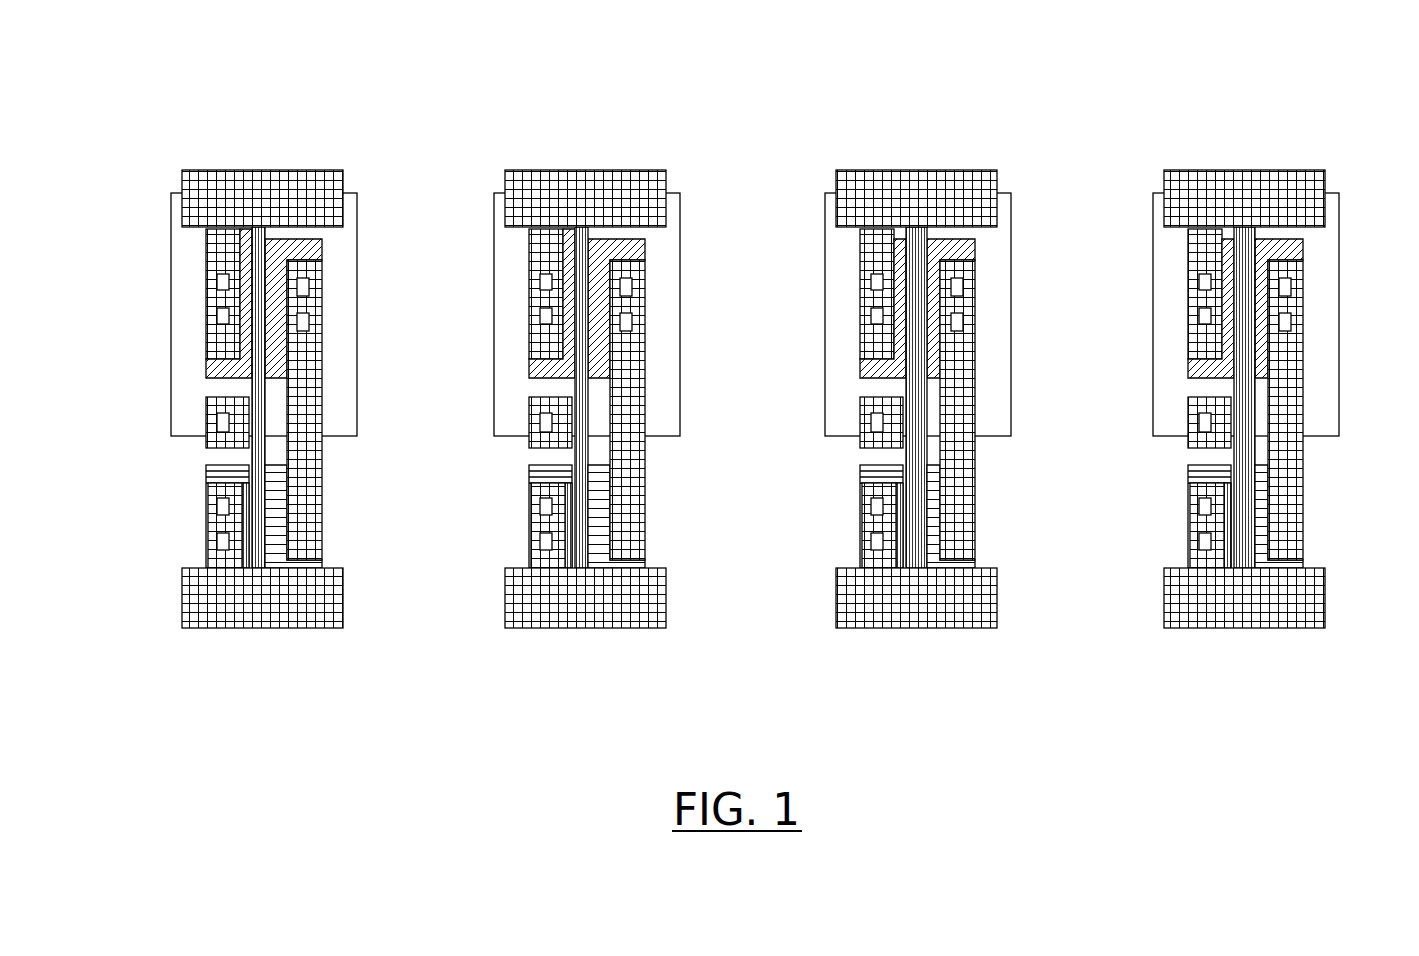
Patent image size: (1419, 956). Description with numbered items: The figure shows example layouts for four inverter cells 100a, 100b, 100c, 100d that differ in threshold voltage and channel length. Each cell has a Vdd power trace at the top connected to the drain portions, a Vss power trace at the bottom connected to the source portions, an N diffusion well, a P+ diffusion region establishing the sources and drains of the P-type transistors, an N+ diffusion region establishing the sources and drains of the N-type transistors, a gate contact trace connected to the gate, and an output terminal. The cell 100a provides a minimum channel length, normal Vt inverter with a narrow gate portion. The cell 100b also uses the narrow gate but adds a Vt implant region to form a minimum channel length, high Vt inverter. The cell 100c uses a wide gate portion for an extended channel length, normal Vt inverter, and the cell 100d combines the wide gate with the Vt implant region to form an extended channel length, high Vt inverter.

The cell 100a is at (263, 82).
The cell 100b is at (585, 82).
The cell 100c is at (912, 82).
The cell 100d is at (1240, 82).